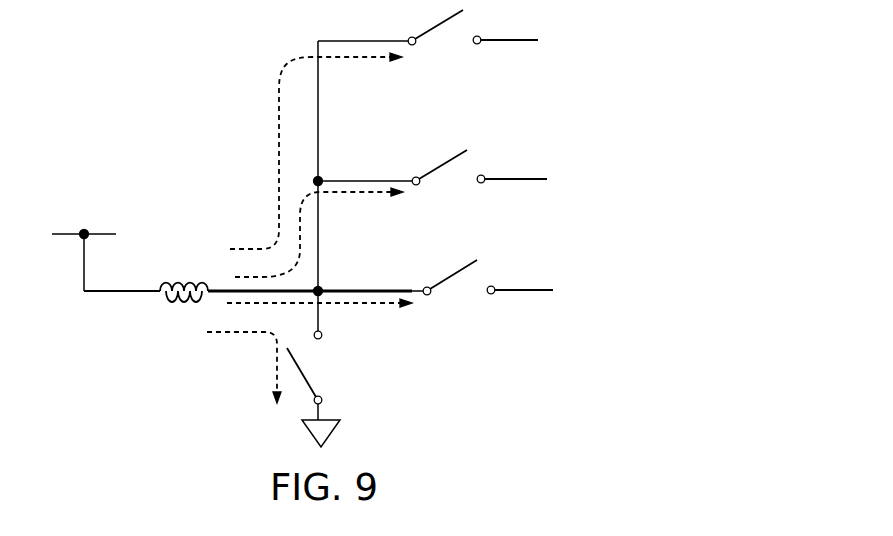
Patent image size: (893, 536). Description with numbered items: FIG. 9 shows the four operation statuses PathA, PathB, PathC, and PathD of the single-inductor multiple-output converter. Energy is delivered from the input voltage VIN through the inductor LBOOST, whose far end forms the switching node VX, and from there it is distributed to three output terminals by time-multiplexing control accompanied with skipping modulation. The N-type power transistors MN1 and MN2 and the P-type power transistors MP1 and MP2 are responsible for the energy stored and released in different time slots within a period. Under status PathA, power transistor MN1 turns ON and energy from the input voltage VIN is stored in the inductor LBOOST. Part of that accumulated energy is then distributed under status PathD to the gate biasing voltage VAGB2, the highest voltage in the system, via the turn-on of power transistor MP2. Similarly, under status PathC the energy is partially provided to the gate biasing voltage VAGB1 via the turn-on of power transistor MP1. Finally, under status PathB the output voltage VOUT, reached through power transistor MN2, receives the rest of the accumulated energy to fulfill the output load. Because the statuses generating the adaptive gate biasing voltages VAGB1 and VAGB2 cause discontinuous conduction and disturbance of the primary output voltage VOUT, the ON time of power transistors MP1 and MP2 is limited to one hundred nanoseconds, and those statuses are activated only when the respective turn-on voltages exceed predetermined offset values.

The input voltage VIN is at (106, 247).
The inductor LBOOST is at (282, 276).
The switching node voltage VX is at (334, 190).
The P-type power transistor MP2 is at (390, 46).
The P-type power transistor MP1 is at (392, 182).
The N-type power transistor MN2 is at (445, 298).
The N-type power transistor MN1 is at (327, 397).
The gate biasing voltage VAGB2 is at (512, 27).
The gate biasing voltage VAGB1 is at (514, 164).
The output voltage VOUT is at (520, 278).
The operation status PathA is at (225, 367).
The operation status PathB is at (319, 315).
The operation status PathC is at (319, 232).
The operation status PathD is at (316, 151).